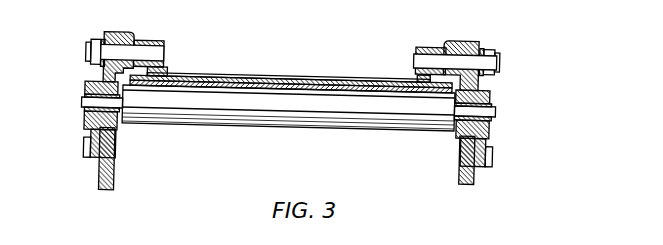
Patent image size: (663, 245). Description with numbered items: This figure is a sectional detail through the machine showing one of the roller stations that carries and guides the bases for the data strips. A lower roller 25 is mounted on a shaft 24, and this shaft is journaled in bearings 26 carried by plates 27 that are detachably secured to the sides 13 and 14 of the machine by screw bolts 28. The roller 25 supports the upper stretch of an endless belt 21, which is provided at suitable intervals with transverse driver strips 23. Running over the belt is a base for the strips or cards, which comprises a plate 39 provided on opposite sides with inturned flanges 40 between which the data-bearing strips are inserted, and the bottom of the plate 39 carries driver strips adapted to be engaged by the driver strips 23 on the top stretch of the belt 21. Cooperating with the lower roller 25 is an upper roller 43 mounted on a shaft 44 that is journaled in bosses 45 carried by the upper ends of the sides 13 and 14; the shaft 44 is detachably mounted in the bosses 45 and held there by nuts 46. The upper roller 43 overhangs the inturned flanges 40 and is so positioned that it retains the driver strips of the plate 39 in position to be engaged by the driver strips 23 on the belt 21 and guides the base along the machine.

The side 13 is at (462, 159).
The side 14 is at (116, 165).
The endless belt 21 is at (283, 86).
The driver strip 23 is at (307, 80).
The shaft 24 is at (85, 105).
The roller 25 is at (348, 106).
The bearing 26 is at (490, 94).
The plate 27 is at (90, 138).
The screw bolt 28 is at (85, 149).
The plate 39 is at (272, 64).
The inturned flange 40 is at (157, 71).
The roller 43 is at (152, 39).
The shaft 44 is at (163, 52).
The boss 45 is at (118, 33).
The nut 46 is at (87, 46).